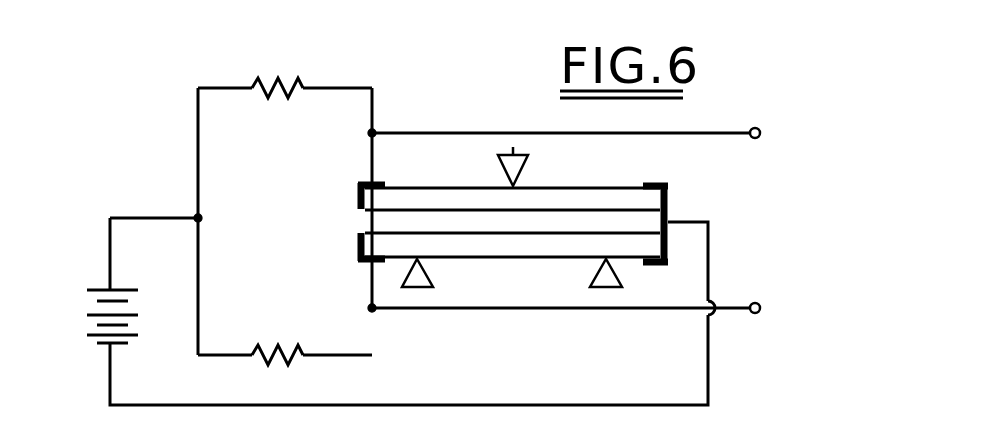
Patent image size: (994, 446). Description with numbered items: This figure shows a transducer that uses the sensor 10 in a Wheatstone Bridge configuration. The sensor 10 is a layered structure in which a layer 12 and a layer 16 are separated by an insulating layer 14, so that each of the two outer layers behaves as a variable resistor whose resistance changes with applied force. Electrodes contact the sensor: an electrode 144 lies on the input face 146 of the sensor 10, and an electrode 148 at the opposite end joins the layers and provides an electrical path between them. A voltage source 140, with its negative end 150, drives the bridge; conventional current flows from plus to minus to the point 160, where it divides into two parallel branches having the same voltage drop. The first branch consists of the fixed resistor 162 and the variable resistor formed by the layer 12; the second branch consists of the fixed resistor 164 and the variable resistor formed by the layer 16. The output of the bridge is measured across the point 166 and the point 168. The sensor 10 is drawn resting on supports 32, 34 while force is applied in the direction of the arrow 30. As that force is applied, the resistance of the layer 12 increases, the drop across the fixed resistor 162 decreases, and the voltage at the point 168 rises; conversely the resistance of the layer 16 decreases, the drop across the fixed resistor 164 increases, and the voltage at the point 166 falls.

The sensor 10 is at (544, 183).
The layer 12 is at (435, 199).
The insulating layer 14 is at (648, 223).
The layer 16 is at (517, 258).
The arrow 30 is at (523, 178).
The left support 32 is at (432, 282).
The right support 34 is at (628, 283).
The voltage source 140 is at (108, 345).
The electrode 144 is at (357, 197).
The input face 146 is at (357, 246).
The electrode 148 is at (668, 196).
The negative end 150 is at (91, 319).
The point 160 is at (197, 216).
The fixed resistor 162 is at (296, 82).
The fixed resistor 164 is at (291, 357).
The point 166 is at (755, 314).
The point 168 is at (755, 139).